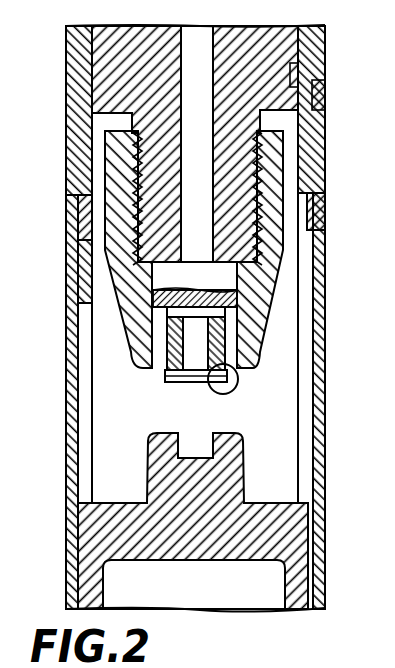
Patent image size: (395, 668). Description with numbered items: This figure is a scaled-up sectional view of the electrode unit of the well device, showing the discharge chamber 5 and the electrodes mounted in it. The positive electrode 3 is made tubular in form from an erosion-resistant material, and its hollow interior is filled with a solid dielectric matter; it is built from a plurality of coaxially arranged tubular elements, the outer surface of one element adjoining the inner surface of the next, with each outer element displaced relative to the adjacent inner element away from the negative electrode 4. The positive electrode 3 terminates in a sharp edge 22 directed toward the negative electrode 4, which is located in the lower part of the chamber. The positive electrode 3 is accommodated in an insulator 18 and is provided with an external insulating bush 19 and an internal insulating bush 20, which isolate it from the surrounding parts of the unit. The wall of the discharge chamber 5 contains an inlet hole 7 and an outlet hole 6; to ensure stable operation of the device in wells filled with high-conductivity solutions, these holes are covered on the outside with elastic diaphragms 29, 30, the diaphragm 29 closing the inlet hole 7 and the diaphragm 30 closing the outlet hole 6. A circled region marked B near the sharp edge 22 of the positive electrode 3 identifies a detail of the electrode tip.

The elastic diaphragm 29 is at (70, 100).
The inlet hole 7 is at (310, 108).
The insulator 18 is at (238, 202).
The external insulating bush 19 is at (285, 230).
The positive electrode 3 is at (227, 277).
The elastic diaphragm 30 is at (70, 297).
The discharge chamber 5 is at (77, 353).
The internal insulating bush 20 is at (222, 341).
The sharp edge 22 is at (170, 381).
The detail B is at (233, 391).
The negative electrode 4 is at (152, 460).
The outlet hole 6 is at (305, 468).